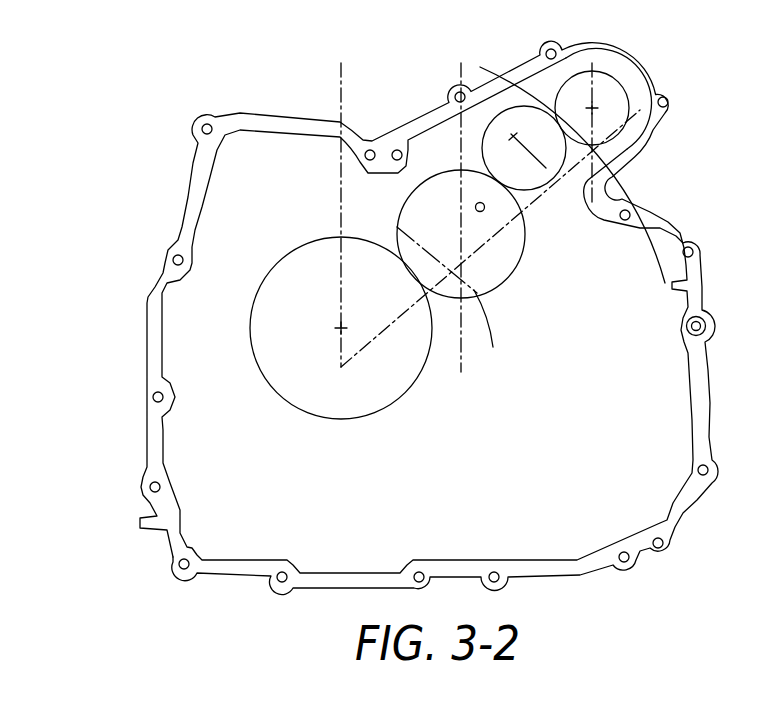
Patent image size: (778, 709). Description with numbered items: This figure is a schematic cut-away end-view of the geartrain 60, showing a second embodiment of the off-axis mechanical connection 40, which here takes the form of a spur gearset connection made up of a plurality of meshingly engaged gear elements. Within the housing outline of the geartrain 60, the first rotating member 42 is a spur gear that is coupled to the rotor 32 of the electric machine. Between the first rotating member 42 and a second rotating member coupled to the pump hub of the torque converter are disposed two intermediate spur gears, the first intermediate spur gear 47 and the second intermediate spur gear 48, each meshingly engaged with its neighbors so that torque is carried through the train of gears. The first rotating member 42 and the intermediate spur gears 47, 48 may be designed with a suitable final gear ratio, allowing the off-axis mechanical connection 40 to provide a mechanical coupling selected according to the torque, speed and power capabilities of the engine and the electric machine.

The geartrain 60 is at (378, 317).
The first rotating member 42 is at (643, 126).
The rotor 32 is at (628, 132).
The second intermediate spur gear 48 is at (557, 180).
The off-axis mechanical connection 40 is at (532, 258).
The first intermediate spur gear 47 is at (503, 283).